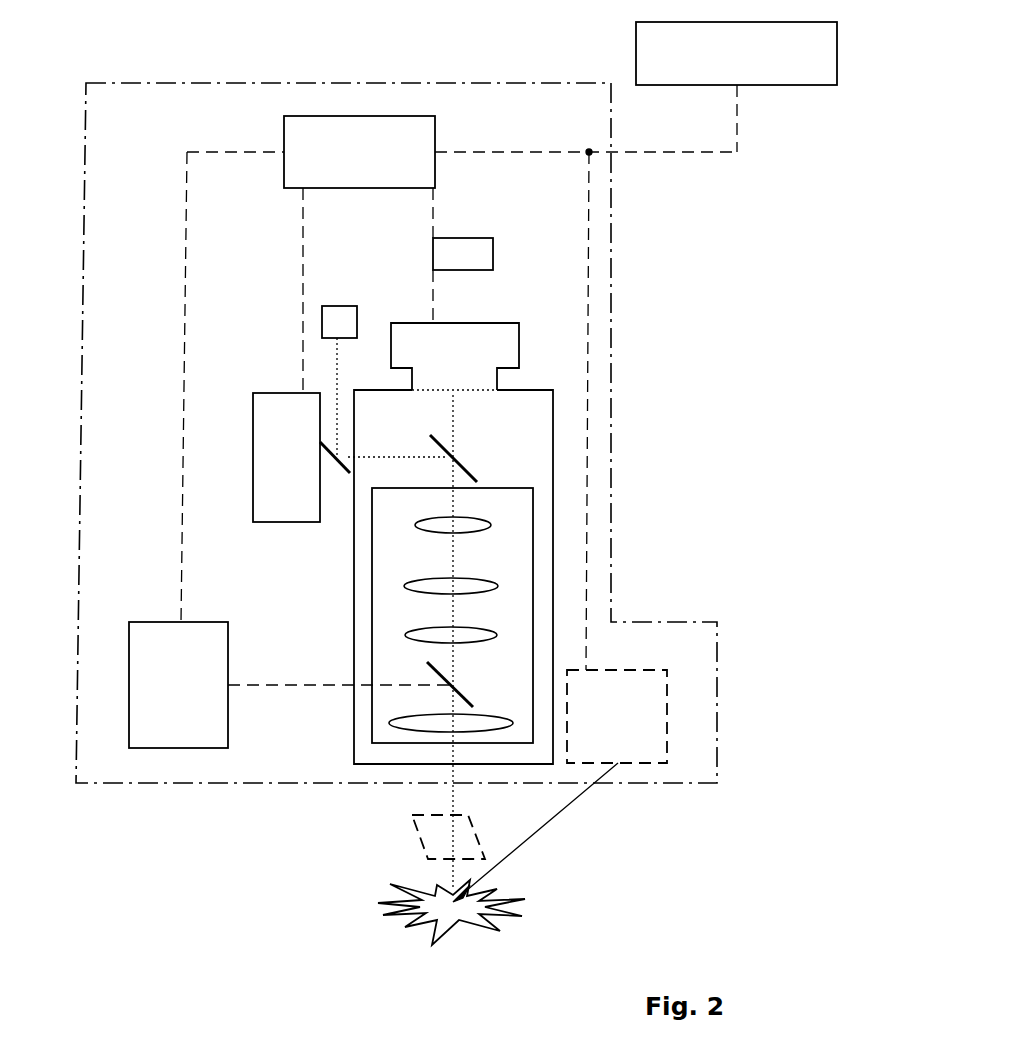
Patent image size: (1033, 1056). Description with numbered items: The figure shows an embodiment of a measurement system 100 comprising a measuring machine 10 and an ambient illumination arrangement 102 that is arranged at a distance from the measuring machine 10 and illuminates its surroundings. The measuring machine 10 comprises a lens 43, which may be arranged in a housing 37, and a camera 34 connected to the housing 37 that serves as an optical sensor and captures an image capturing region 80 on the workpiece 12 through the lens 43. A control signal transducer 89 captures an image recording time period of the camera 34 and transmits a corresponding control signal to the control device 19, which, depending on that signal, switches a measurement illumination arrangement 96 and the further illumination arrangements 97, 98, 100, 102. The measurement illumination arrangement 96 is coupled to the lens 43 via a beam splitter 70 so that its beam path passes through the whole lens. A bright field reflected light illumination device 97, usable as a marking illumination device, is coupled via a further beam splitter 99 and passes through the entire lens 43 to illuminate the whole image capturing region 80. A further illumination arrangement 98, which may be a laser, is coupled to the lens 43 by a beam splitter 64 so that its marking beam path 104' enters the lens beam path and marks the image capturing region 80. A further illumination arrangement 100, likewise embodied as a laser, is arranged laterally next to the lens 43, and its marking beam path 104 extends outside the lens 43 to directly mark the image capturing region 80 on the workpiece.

The measuring machine 10 is at (611, 268).
The workpiece 12 is at (425, 915).
The control device 19 is at (350, 166).
The camera 34 is at (405, 323).
The housing 37 is at (553, 420).
The lens 43 is at (533, 540).
The beam splitter 64 is at (470, 690).
The beam splitter 70 is at (480, 465).
The image capturing region 80 is at (410, 840).
The control signal transducer 89 is at (494, 255).
The measurement illumination arrangement 96 is at (270, 393).
The bright field reflected light illumination device 97 is at (337, 306).
The further illumination arrangement 98 is at (149, 622).
The further beam splitter 99 is at (345, 475).
The measurement system 100 is at (667, 705).
The ambient illumination arrangement 102 is at (718, 68).
The marking beam path 104 is at (548, 832).
The marking beam path 104' is at (339, 648).